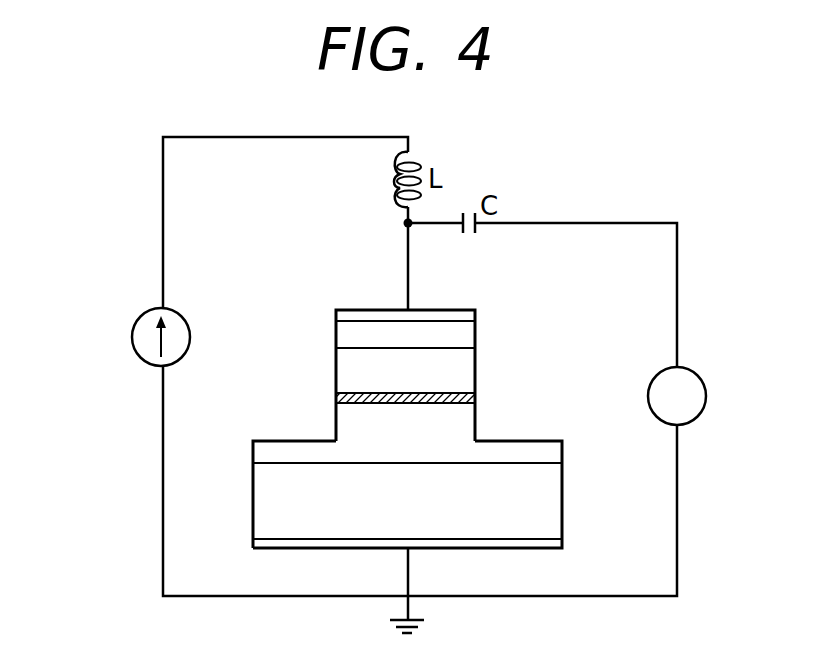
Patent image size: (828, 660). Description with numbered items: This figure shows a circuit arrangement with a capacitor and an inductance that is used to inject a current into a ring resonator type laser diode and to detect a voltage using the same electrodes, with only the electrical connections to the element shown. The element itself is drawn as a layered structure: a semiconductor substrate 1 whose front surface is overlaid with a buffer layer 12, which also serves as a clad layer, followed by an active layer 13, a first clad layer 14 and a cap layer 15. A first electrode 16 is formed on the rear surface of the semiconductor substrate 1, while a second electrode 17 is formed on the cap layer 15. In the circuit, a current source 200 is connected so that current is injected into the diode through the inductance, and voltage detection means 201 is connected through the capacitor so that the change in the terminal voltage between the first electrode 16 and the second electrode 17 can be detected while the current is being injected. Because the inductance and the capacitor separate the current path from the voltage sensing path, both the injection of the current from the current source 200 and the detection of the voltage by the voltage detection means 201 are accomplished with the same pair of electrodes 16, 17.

The semiconductor substrate 1 is at (260, 505).
The buffer layer 12 is at (260, 441).
The active layer 13 is at (336, 397).
The first clad layer 14 is at (468, 372).
The cap layer 15 is at (468, 330).
The first electrode 16 is at (288, 548).
The second electrode 17 is at (458, 318).
The current source 200 is at (141, 312).
The voltage detection means 201 is at (700, 372).